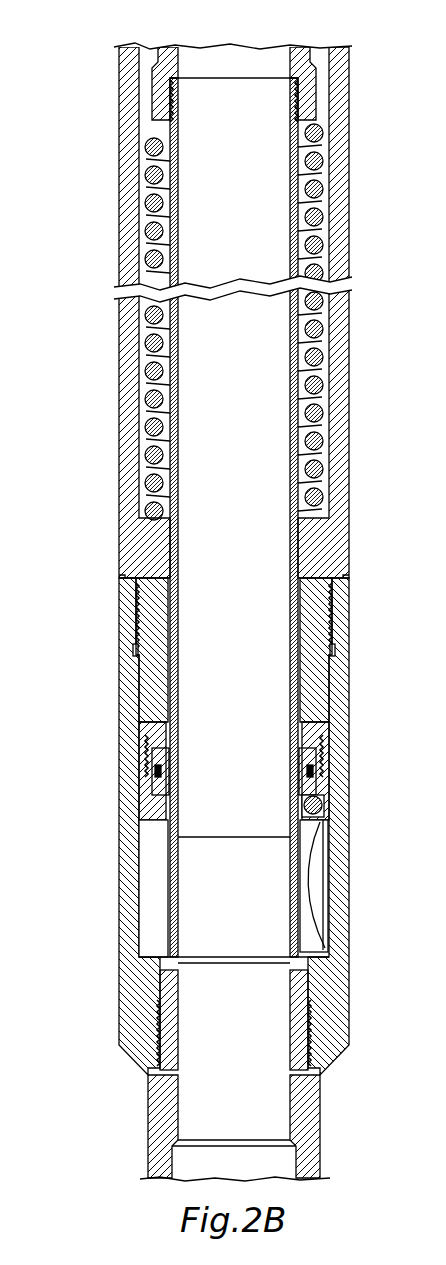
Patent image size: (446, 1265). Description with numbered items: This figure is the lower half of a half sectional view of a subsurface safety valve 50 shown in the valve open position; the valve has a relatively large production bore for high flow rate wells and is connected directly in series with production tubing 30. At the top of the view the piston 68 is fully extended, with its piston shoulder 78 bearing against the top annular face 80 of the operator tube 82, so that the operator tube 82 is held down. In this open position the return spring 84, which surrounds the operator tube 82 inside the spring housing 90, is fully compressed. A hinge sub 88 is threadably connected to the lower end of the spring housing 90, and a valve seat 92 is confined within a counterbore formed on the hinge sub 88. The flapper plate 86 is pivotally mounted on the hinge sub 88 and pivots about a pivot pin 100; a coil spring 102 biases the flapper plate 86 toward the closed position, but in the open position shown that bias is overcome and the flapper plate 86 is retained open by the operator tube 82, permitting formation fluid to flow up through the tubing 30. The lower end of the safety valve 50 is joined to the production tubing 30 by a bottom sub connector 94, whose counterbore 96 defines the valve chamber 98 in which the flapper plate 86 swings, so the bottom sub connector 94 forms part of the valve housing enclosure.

The production tubing 30 is at (320, 1113).
The subsurface safety valve 50 is at (377, 180).
The piston 68 is at (302, 60).
The piston shoulder 78 is at (172, 92).
The top annular face 80 is at (244, 78).
The operator tube 82 is at (180, 892).
The return spring 84 is at (312, 363).
The flapper plate 86 is at (315, 889).
The hinge sub 88 is at (145, 813).
The spring housing 90 is at (125, 97).
The valve seat 92 is at (172, 771).
The bottom sub connector 94 is at (335, 1021).
The counterbore 96 is at (325, 951).
The valve chamber 98 is at (150, 921).
The pivot pin 100 is at (322, 800).
The coil spring 102 is at (326, 813).